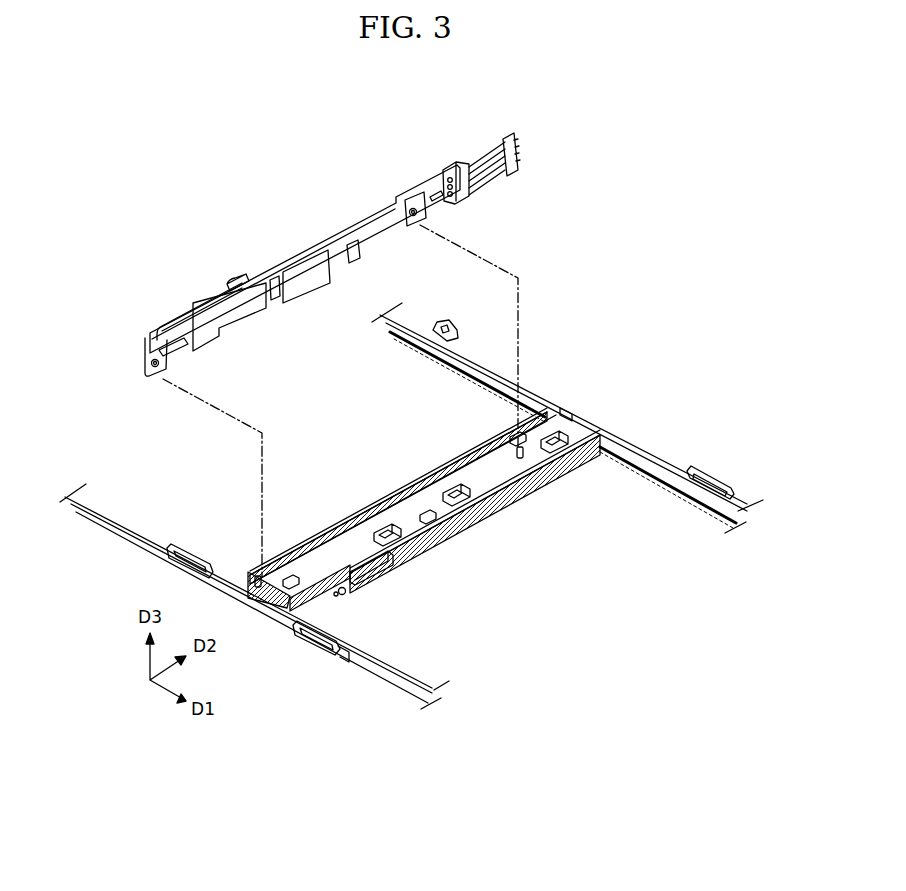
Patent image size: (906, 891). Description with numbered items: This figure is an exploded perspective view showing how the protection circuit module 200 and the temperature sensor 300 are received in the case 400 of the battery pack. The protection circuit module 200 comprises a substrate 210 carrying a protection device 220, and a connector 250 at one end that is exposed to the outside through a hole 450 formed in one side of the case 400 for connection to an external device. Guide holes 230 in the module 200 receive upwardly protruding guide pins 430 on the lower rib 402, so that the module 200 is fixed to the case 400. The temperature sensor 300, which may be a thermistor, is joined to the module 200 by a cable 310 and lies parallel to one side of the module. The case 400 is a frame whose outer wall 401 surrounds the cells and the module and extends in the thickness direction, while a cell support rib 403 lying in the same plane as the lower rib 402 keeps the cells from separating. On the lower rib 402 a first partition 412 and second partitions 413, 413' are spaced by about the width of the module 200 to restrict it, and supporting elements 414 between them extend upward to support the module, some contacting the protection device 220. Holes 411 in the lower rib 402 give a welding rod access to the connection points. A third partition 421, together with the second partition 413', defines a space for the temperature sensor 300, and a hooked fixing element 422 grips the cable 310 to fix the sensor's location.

The protection circuit module 200 is at (332, 256).
The substrate 210 is at (345, 227).
The protection device 220 is at (334, 300).
The guide holes 230 is at (415, 216).
The connector 250 is at (512, 138).
The temperature sensor 300 is at (238, 275).
The cable 310 is at (196, 302).
The case 400 is at (411, 510).
The outer wall 401 is at (626, 440).
The lower rib 402 is at (413, 494).
The cell support rib 403 is at (700, 507).
The holes 411 is at (515, 434).
The first partition 412 is at (475, 460).
The second partition 413 is at (425, 502).
The second partition 413' is at (302, 552).
The supporting elements 414 is at (549, 428).
The third partition 421 is at (390, 570).
The fixing element 422 is at (345, 594).
The guide pins 430 is at (526, 459).
The hole 450 is at (563, 413).